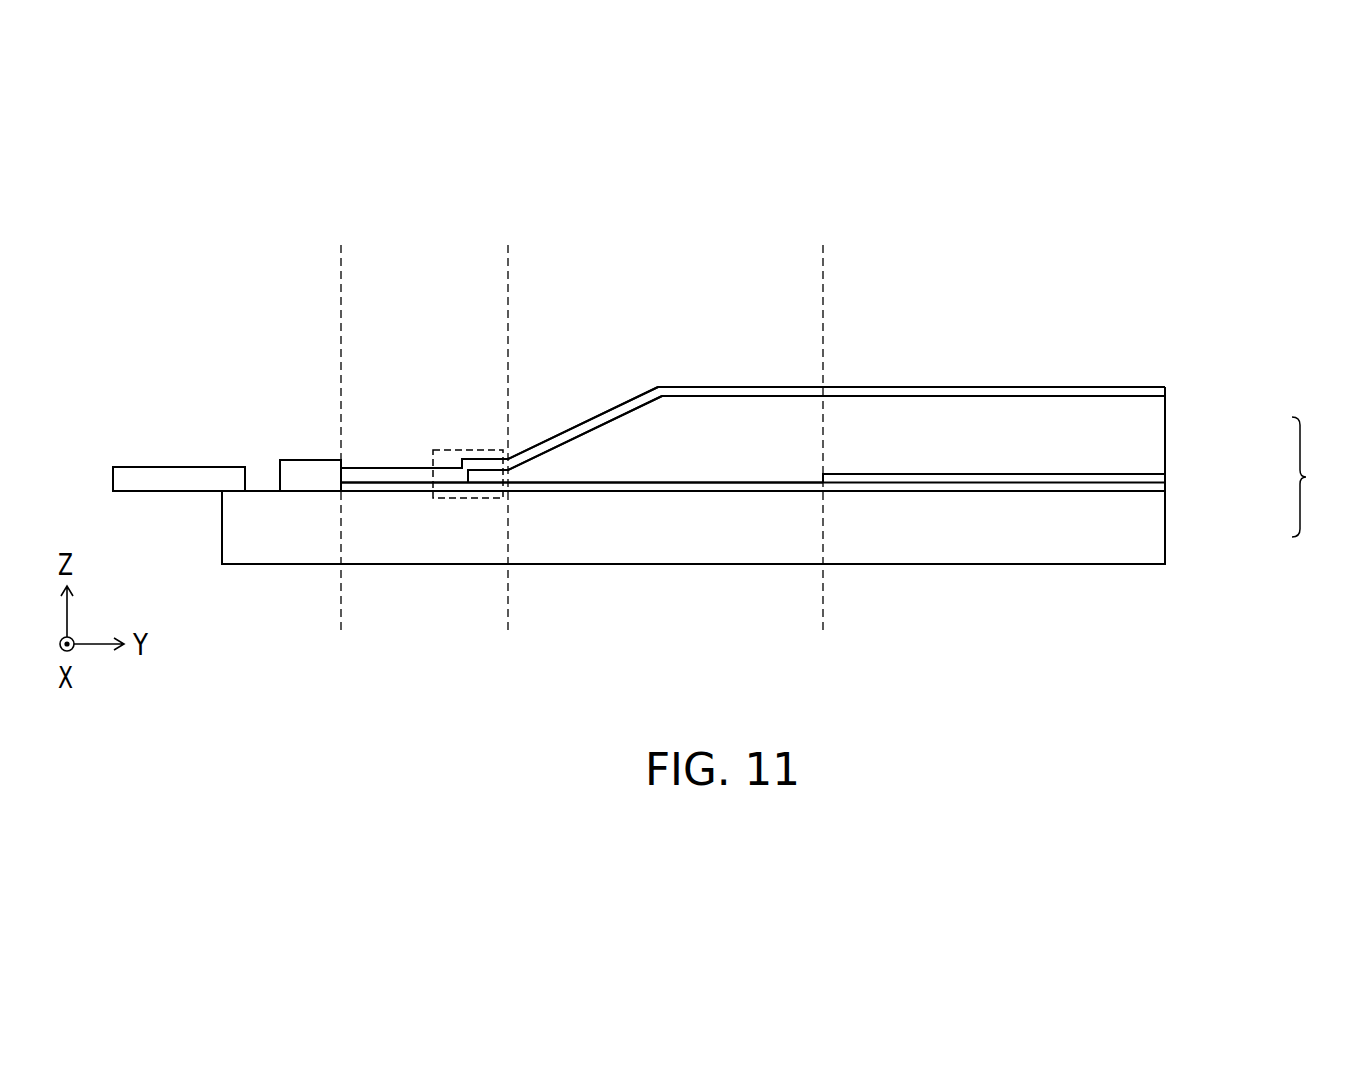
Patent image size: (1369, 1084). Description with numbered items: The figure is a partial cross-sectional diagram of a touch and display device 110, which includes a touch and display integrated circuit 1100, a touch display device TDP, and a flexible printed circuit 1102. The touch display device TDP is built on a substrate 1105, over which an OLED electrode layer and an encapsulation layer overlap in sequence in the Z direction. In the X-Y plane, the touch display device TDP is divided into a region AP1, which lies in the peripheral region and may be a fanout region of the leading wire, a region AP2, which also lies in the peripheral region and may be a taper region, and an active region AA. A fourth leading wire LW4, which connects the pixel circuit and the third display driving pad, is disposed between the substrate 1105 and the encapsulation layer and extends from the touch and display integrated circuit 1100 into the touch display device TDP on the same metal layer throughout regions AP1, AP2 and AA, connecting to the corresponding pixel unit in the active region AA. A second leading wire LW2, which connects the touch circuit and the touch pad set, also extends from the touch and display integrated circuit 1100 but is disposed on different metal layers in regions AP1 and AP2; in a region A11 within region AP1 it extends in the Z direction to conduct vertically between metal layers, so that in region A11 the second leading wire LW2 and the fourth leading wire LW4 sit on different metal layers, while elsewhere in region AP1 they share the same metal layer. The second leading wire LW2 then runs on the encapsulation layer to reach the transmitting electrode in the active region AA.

The touch and display device 110 is at (1292, 673).
The touch and display integrated circuit 1100 is at (310, 460).
The flexible printed circuit 1102 is at (185, 467).
The substrate 1105 is at (1148, 527).
The second leading wire LW2 is at (590, 426).
The fourth leading wire LW4 is at (653, 487).
The region A11 is at (448, 498).
The region AP1 is at (496, 249).
The region AP2 is at (811, 249).
The active region AA is at (1128, 249).
The touch display device TDP is at (1318, 477).